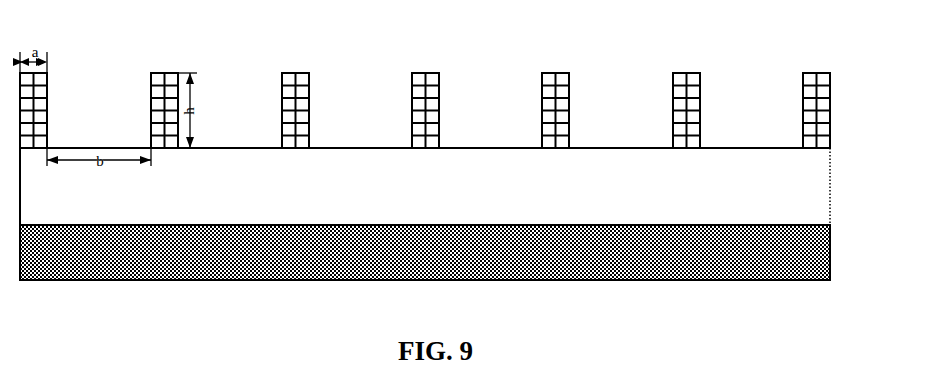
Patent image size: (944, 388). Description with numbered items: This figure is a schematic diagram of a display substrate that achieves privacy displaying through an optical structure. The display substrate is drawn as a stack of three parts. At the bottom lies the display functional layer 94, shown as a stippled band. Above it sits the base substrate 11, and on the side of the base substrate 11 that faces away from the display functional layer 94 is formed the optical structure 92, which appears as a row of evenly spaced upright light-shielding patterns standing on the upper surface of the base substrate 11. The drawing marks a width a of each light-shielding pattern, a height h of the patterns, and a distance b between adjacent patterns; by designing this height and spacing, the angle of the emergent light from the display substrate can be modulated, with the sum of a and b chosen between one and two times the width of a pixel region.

The optical structure 92 is at (830, 97).
The base substrate 11 is at (832, 184).
The display functional layer 94 is at (831, 265).